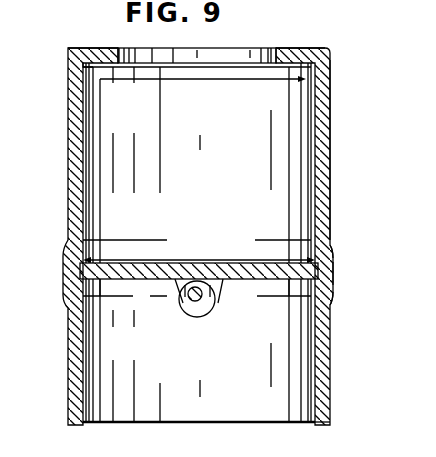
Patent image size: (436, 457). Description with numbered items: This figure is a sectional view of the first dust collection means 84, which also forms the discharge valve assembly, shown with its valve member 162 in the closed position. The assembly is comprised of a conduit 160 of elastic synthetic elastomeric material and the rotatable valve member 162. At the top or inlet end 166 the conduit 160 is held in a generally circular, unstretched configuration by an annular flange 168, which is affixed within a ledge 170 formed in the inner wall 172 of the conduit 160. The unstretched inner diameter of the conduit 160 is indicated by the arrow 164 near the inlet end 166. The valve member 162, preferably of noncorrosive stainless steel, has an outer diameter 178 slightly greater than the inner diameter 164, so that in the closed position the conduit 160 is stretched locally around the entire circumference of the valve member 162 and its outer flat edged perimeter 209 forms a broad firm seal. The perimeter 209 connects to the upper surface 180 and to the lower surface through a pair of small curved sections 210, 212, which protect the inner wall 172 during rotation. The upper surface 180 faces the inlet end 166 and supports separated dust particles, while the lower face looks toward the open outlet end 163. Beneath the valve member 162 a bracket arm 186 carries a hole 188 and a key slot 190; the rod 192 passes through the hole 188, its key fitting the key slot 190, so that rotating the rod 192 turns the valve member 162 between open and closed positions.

The first dust collection means 84 is at (338, 45).
The conduit 160 is at (338, 146).
The inlet end 166 is at (68, 50).
The annular flange 168 is at (290, 47).
The ledge 170 is at (92, 76).
The inner diameter 164 is at (200, 81).
The inner wall 172 is at (90, 164).
The upper major surface 180 is at (128, 261).
The outer diameter 178 is at (188, 262).
The curved section 210 is at (332, 253).
The flat edged perimeter 209 is at (330, 273).
The curved section 212 is at (334, 291).
The outlet end 163 is at (320, 428).
The valve member 162 is at (141, 288).
The rod 192 is at (188, 308).
The hole 188 is at (218, 307).
The key slot 190 is at (201, 314).
The arm 186 is at (196, 316).